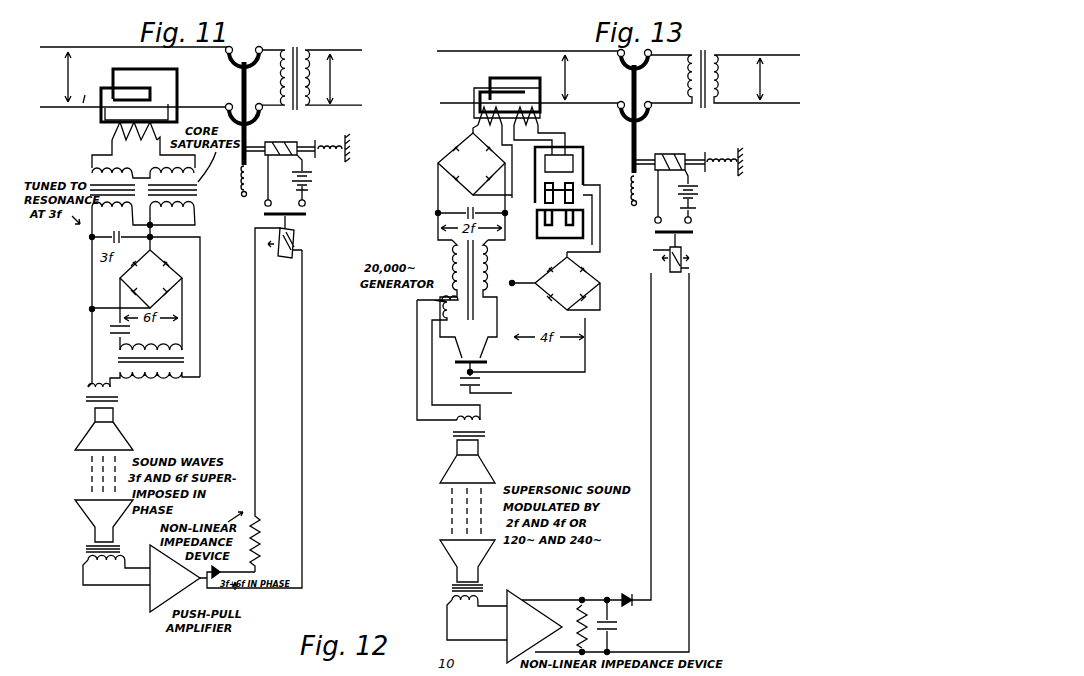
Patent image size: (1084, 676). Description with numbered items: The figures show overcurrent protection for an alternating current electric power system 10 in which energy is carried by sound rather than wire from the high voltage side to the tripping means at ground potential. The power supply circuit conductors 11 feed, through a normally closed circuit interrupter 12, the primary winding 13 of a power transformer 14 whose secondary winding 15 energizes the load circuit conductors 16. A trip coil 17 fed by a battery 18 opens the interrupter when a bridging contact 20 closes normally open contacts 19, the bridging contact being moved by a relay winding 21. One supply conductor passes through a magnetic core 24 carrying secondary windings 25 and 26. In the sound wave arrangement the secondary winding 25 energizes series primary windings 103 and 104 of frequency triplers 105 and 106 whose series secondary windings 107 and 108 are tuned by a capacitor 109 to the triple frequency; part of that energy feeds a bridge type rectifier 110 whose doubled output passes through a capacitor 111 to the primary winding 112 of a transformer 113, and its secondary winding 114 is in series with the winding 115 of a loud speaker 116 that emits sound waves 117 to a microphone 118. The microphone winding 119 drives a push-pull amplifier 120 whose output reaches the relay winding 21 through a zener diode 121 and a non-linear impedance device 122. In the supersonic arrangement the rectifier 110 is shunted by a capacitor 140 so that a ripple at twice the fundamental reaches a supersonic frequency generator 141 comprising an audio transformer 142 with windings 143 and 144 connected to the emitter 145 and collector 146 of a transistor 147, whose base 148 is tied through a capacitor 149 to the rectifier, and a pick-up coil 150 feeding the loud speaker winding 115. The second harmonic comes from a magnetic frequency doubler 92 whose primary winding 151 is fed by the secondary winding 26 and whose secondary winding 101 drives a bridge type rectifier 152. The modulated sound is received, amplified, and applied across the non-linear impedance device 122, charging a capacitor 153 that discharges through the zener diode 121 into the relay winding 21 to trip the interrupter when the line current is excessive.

In FIG. 11, the alternating current electric power system 10 is at (117, 34).
In FIG. 13, the alternating current electric power system 10 is at (559, 34).
In FIG. 11, the power supply circuit conductors 11 is at (73, 47).
In FIG. 13, the power supply circuit conductors 11 is at (455, 50).
In FIG. 11, the circuit interrupter 12 is at (270, 119).
In FIG. 13, the circuit interrupter 12 is at (659, 119).
In FIG. 11, the primary winding 13 is at (280, 84).
In FIG. 13, the primary winding 13 is at (684, 82).
In FIG. 11, the power transformer 14 is at (299, 42).
In FIG. 13, the power transformer 14 is at (707, 44).
In FIG. 11, the secondary winding 15 is at (312, 60).
In FIG. 13, the secondary winding 15 is at (722, 76).
In FIG. 11, the load circuit conductors 16 is at (351, 48).
In FIG. 13, the load circuit conductors 16 is at (780, 52).
In FIG. 11, the trip winding or coil 17 is at (296, 145).
In FIG. 13, the trip winding or coil 17 is at (688, 154).
In FIG. 11, the battery 18 is at (315, 183).
In FIG. 13, the battery 18 is at (705, 190).
In FIG. 11, the normally open contacts 19 is at (281, 199).
In FIG. 13, the normally open contacts 19 is at (700, 216).
In FIG. 11, the bridging contact 20 is at (306, 215).
In FIG. 13, the bridging contact 20 is at (695, 232).
In FIG. 11, the relay winding 21 is at (296, 244).
In FIG. 13, the relay winding 21 is at (685, 258).
In FIG. 11, the magnetic core 24 is at (153, 72).
In FIG. 13, the magnetic core 24 is at (510, 76).
In FIG. 11, the secondary winding 25 is at (140, 122).
In FIG. 13, the secondary winding 25 is at (485, 112).
In FIG. 13, the secondary winding 26 is at (533, 112).
In FIG. 13, the polarized relay 92 is at (592, 156).
In FIG. 13, the secondary winding 101 is at (560, 197).
In FIG. 11, the primary winding 103 is at (95, 166).
In FIG. 11, the primary winding 104 is at (170, 174).
In FIG. 11, the frequency tripler 105 is at (75, 168).
In FIG. 11, the frequency tripler 106 is at (205, 189).
In FIG. 11, the secondary winding 107 is at (88, 231).
In FIG. 11, the secondary winding 108 is at (197, 226).
In FIG. 11, the capacitor 109 is at (121, 213).
In FIG. 11, the bridge type rectifier 110 is at (182, 264).
In FIG. 13, the bridge type rectifier 110 is at (449, 142).
In FIG. 11, the capacitor 111 is at (108, 330).
In FIG. 11, the primary winding 112 is at (148, 348).
In FIG. 11, the transformer 113 is at (191, 355).
In FIG. 11, the secondary winding 114 is at (168, 376).
In FIG. 11, the loud speaker winding 115 is at (95, 383).
In FIG. 13, the loud speaker winding 115 is at (482, 420).
In FIG. 11, the loud speaker 116 is at (79, 420).
In FIG. 13, the loud speaker 116 is at (433, 451).
In FIG. 11, the sound waves 117 is at (88, 478).
In FIG. 13, the sound waves 117 is at (450, 498).
In FIG. 11, the receiver or microphone 118 is at (75, 536).
In FIG. 13, the receiver or microphone 118 is at (435, 568).
In FIG. 11, the microphone winding 119 is at (100, 568).
In FIG. 13, the microphone winding 119 is at (463, 605).
In FIG. 11, the amplifier 120 is at (148, 600).
In FIG. 13, the amplifier 120 is at (538, 623).
In FIG. 11, the zener diode 121 is at (210, 590).
In FIG. 13, the zener diode 121 is at (627, 594).
In FIG. 11, the non-linear impedance device 122 is at (258, 540).
In FIG. 13, the non-linear impedance device 122 is at (583, 600).
In FIG. 13, the capacitor 140 is at (470, 210).
In FIG. 13, the supersonic frequency generator 141 is at (420, 253).
In FIG. 13, the audio transformer 142 is at (514, 238).
In FIG. 13, the winding 143 is at (455, 262).
In FIG. 13, the winding 144 is at (490, 270).
In FIG. 13, the emitter 145 is at (464, 352).
In FIG. 13, the collector 146 is at (499, 349).
In FIG. 13, the transistor 147 is at (448, 364).
In FIG. 13, the base 148 is at (462, 365).
In FIG. 13, the capacitor 149 is at (483, 385).
In FIG. 13, the pick-up coil 150 is at (445, 310).
In FIG. 13, the primary winding 151 is at (555, 150).
In FIG. 13, the bridge type rectifier 152 is at (580, 266).
In FIG. 13, the capacitor 153 is at (620, 627).